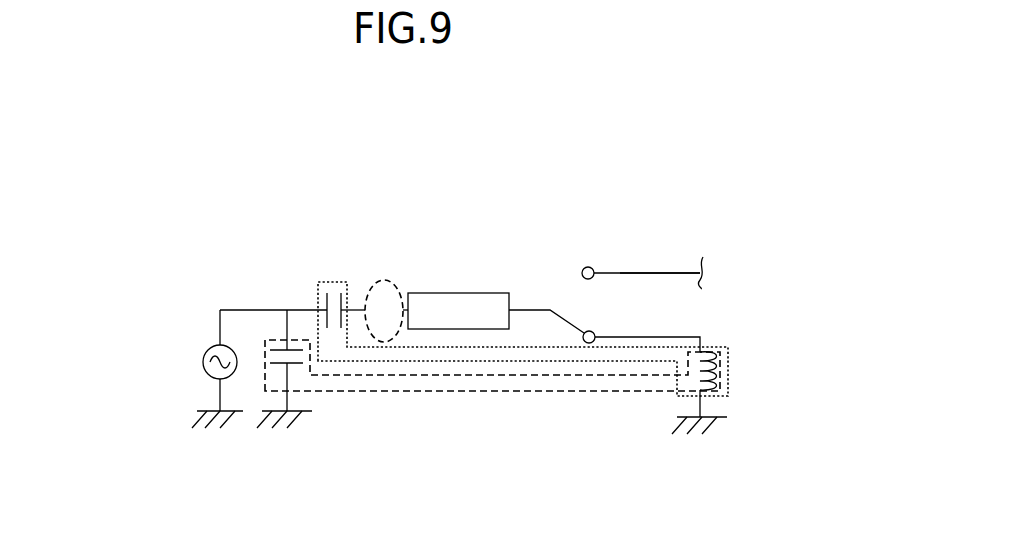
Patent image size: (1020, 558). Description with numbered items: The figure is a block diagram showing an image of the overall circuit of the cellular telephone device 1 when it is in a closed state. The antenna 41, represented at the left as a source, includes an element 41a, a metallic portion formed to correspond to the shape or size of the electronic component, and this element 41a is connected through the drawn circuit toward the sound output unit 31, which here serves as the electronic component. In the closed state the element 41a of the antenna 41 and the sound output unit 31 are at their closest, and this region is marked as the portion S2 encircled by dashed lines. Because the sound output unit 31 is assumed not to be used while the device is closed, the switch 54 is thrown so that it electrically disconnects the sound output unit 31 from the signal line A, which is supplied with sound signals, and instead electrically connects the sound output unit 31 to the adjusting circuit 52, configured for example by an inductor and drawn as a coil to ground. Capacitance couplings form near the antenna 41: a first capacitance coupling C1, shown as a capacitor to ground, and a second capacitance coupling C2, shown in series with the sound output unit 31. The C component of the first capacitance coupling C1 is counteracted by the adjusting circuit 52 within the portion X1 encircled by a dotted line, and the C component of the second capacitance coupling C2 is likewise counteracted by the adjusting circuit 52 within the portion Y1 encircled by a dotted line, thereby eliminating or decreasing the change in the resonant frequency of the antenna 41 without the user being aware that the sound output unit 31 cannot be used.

The cellular telephone device 1 is at (683, 128).
The antenna 41 is at (180, 362).
The element 41a is at (243, 308).
The first capacitance coupling C1 is at (297, 365).
The second capacitance coupling C2 is at (326, 297).
The portion encircled by the dotted line Y1 is at (341, 281).
The portion encircled by the dashed lines S2 is at (389, 266).
The sound output unit 31 is at (447, 292).
The switch 54 is at (590, 238).
The signal line A is at (658, 272).
The adjusting circuit 52 is at (747, 372).
The portion encircled by the dotted line X1 is at (482, 393).